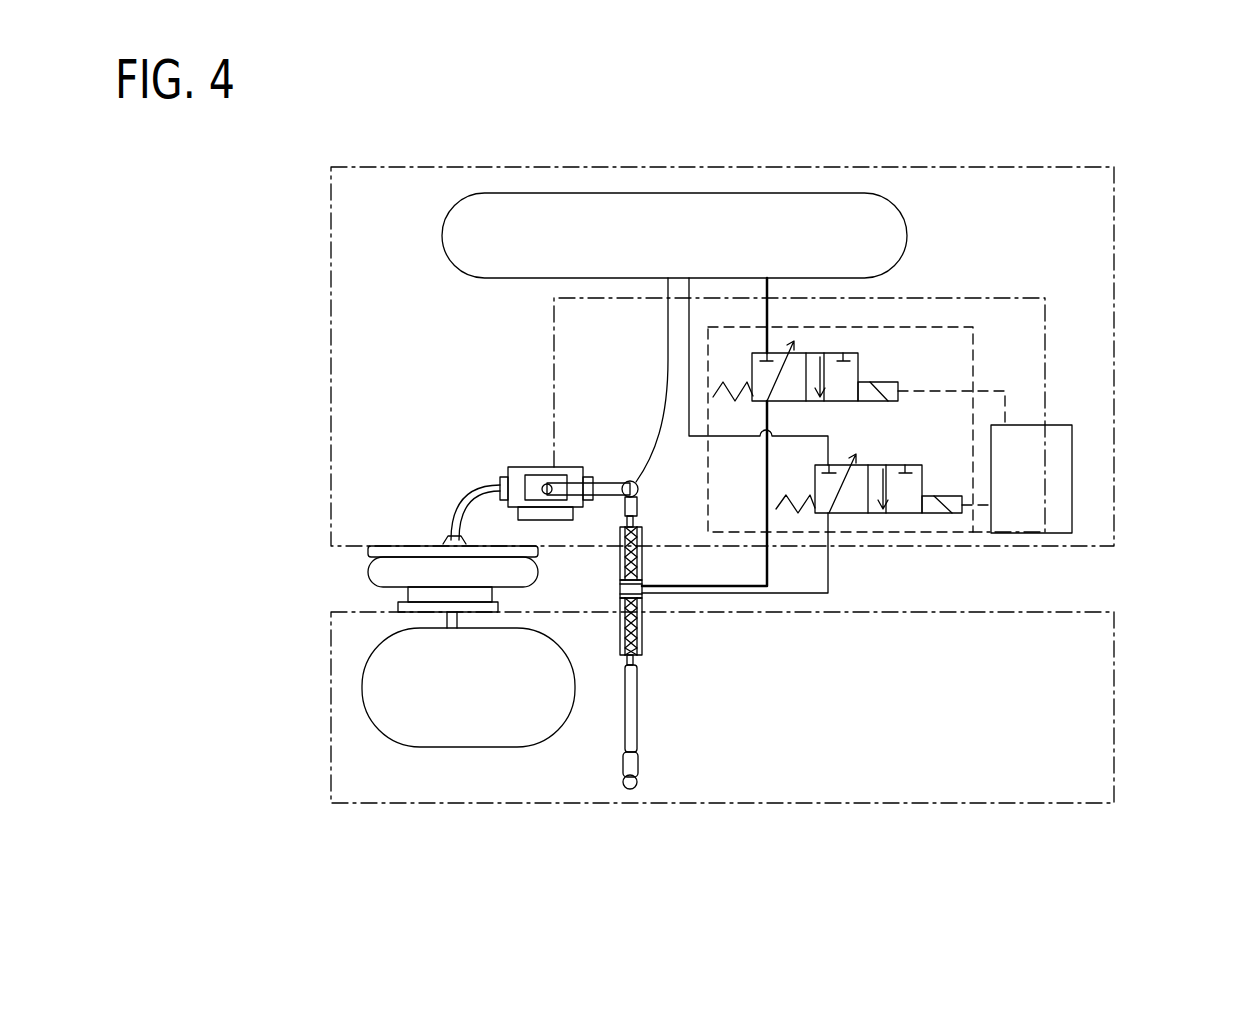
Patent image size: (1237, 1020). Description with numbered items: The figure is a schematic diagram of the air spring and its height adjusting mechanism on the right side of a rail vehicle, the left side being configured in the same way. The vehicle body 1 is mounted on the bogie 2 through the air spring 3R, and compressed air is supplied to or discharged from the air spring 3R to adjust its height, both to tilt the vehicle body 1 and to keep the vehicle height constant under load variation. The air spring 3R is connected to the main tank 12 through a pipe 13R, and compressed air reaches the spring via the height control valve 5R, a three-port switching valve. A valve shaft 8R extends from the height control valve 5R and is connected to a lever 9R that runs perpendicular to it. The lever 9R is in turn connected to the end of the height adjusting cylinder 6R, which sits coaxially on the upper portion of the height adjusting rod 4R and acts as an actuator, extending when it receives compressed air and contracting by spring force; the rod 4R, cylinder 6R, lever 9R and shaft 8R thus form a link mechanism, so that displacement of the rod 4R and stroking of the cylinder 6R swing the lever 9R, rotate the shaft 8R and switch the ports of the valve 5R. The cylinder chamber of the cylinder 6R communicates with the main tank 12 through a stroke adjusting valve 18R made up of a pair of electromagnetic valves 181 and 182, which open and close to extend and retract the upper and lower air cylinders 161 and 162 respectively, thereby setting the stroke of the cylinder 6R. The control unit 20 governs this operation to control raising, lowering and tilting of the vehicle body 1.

The vehicle body 1 is at (1114, 400).
The bogie 2 is at (1114, 657).
The main tank 12 is at (637, 203).
The pipe 13R is at (657, 427).
The air spring 3R is at (370, 570).
The height adjusting rod 4R is at (637, 723).
The height control valve 5R is at (507, 468).
The height adjusting cylinder 6R is at (627, 643).
The valve shaft 8R is at (546, 486).
The lever 9R is at (598, 483).
The upper air cylinder 161 is at (642, 556).
The lower air cylinder 162 is at (642, 640).
The electromagnetic valve 181 is at (858, 370).
The electromagnetic valve 182 is at (893, 465).
The stroke adjusting valve 18R is at (866, 429).
The control unit 20 is at (1065, 417).